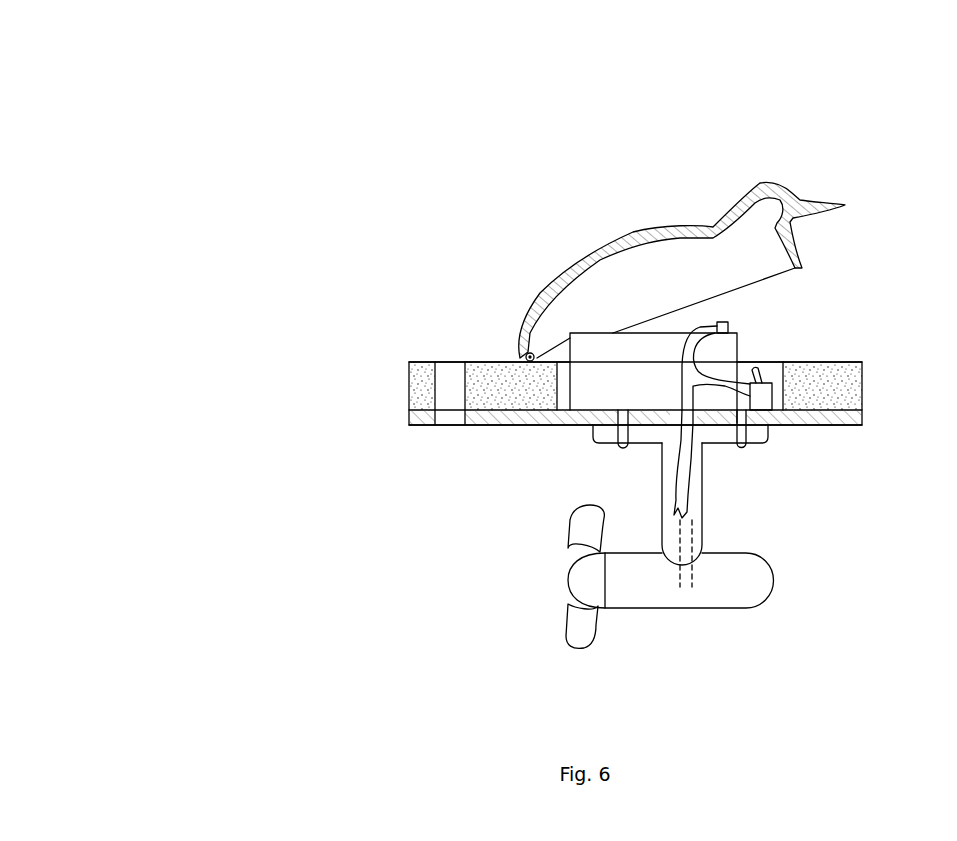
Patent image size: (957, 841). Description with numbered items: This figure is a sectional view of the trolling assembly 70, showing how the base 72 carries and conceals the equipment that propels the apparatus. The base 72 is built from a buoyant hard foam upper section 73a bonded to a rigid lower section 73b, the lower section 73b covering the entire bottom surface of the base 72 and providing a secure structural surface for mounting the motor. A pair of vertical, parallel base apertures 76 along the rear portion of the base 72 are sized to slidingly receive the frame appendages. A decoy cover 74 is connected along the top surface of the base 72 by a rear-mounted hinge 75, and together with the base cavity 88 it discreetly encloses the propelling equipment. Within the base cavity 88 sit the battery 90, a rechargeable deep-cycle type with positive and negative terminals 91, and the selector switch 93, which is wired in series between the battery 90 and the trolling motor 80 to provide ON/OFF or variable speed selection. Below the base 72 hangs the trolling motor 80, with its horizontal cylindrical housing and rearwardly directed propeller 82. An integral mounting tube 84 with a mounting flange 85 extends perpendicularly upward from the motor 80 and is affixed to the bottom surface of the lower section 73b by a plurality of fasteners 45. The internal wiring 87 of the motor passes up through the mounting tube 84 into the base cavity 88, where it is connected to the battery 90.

The trolling assembly 70 is at (216, 128).
The base 72 is at (442, 356).
The upper section 73a is at (412, 400).
The lower section 73b is at (480, 425).
The decoy cover 74 is at (657, 232).
The rear-mounted hinge 75 is at (522, 352).
The base apertures 76 is at (435, 393).
The trolling motor 80 is at (727, 608).
The propeller 82 is at (580, 624).
The mounting tube 84 is at (705, 488).
The mounting flange 85 is at (594, 441).
The fasteners 45 is at (618, 450).
The internal wiring 87 is at (683, 382).
The base cavity 88 is at (557, 395).
The battery 90 is at (598, 333).
The terminals 91 is at (730, 325).
The selector switch 93 is at (762, 393).